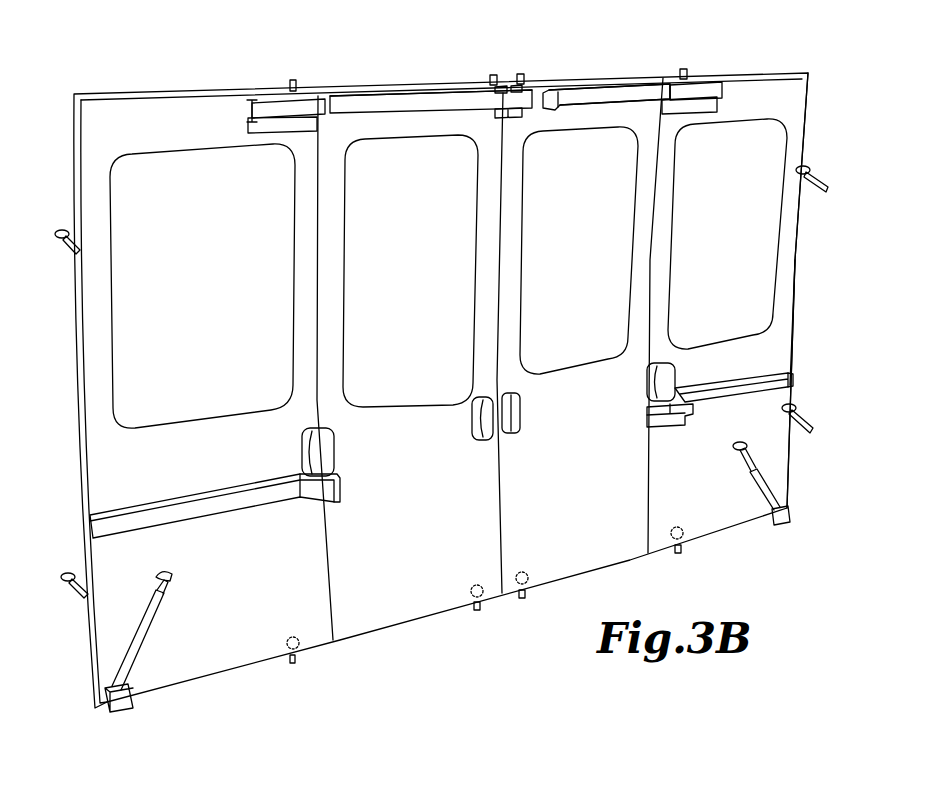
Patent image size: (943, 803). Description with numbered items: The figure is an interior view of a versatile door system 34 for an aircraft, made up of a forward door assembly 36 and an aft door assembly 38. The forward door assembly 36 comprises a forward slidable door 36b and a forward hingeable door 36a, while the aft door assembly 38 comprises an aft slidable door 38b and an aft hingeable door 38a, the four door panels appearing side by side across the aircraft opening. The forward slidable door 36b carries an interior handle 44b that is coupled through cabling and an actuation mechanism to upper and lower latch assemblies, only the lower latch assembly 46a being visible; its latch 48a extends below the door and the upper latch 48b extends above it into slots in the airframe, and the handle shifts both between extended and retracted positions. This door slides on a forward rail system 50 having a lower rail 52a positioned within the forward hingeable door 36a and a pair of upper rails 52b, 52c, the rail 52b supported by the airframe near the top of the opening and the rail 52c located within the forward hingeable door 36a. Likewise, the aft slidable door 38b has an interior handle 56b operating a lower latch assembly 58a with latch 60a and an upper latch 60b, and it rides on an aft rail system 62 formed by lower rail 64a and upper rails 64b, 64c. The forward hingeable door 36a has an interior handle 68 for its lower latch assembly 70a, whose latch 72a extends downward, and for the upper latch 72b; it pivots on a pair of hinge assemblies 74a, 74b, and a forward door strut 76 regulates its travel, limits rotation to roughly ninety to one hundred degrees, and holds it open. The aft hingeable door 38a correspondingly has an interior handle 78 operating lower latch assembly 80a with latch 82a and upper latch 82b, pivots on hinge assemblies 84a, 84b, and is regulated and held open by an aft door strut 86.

The versatile door system 34 is at (164, 78).
The forward door assembly 36 is at (773, 66).
The forward hingeable door 36a is at (727, 300).
The forward slidable door 36b is at (579, 314).
The first door 38 is at (211, 84).
The first door panel 38a is at (202, 374).
The first door panel 38b is at (410, 335).
The interior handle 44b is at (520, 416).
The lower latch assembly 46a is at (540, 585).
The latch 48a is at (521, 599).
The latch 48b is at (521, 73).
The forward rail system 50 is at (573, 92).
The lower rail 52a is at (796, 383).
The upper rail 52b is at (627, 92).
The upper rail 52c is at (712, 90).
The interior handle 56b is at (478, 424).
The lower latch assembly 58a is at (470, 600).
The latch 60a is at (476, 611).
The latch 60b is at (492, 76).
The aft rail system 62 is at (401, 103).
The lower rail 64a is at (92, 526).
The upper rail 64b is at (361, 102).
The upper rail 64c is at (265, 108).
The interior handle 68 is at (672, 381).
The lower latch assembly 70a is at (690, 544).
The latch 72a is at (677, 554).
The latch 72b is at (684, 68).
The hinge assembly 74a is at (805, 412).
The hinge assembly 74b is at (810, 170).
The forward door strut 76 is at (770, 488).
The interior handle 78 is at (332, 455).
The lower latch assembly 80a is at (302, 650).
The latch 82a is at (292, 664).
The latch 82b is at (292, 79).
The hinge assembly 84a is at (66, 585).
The hinge assembly 84b is at (58, 236).
The aft door strut 86 is at (122, 658).